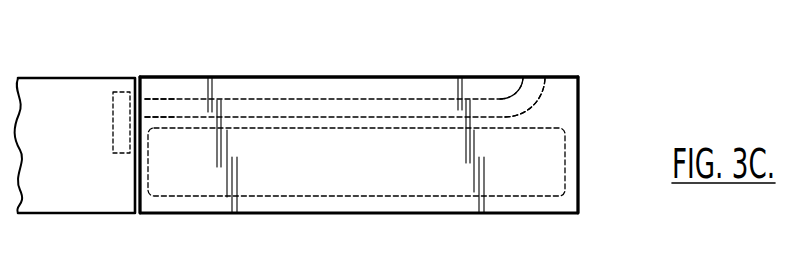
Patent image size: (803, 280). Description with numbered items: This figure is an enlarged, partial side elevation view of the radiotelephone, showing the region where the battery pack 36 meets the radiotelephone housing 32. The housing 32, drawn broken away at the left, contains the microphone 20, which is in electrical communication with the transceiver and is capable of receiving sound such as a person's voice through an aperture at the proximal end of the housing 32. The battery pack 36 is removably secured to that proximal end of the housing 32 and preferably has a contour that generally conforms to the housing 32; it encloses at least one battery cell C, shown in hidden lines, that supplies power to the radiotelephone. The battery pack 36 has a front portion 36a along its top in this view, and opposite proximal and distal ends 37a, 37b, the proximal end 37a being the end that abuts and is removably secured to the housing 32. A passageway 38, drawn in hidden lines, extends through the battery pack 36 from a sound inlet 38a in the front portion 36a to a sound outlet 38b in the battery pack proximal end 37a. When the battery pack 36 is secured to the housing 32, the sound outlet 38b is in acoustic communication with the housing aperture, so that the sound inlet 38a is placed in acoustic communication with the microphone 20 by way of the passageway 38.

The microphone 20 is at (101, 112).
The housing 32 is at (65, 200).
The battery pack 36 is at (580, 178).
The front portion 36a is at (285, 77).
The battery pack proximal end 37a is at (138, 182).
The battery pack distal end 37b is at (580, 135).
The passageway 38 is at (360, 99).
The sound inlet 38a is at (539, 66).
The sound outlet 38b is at (145, 100).
The battery cell C is at (273, 173).